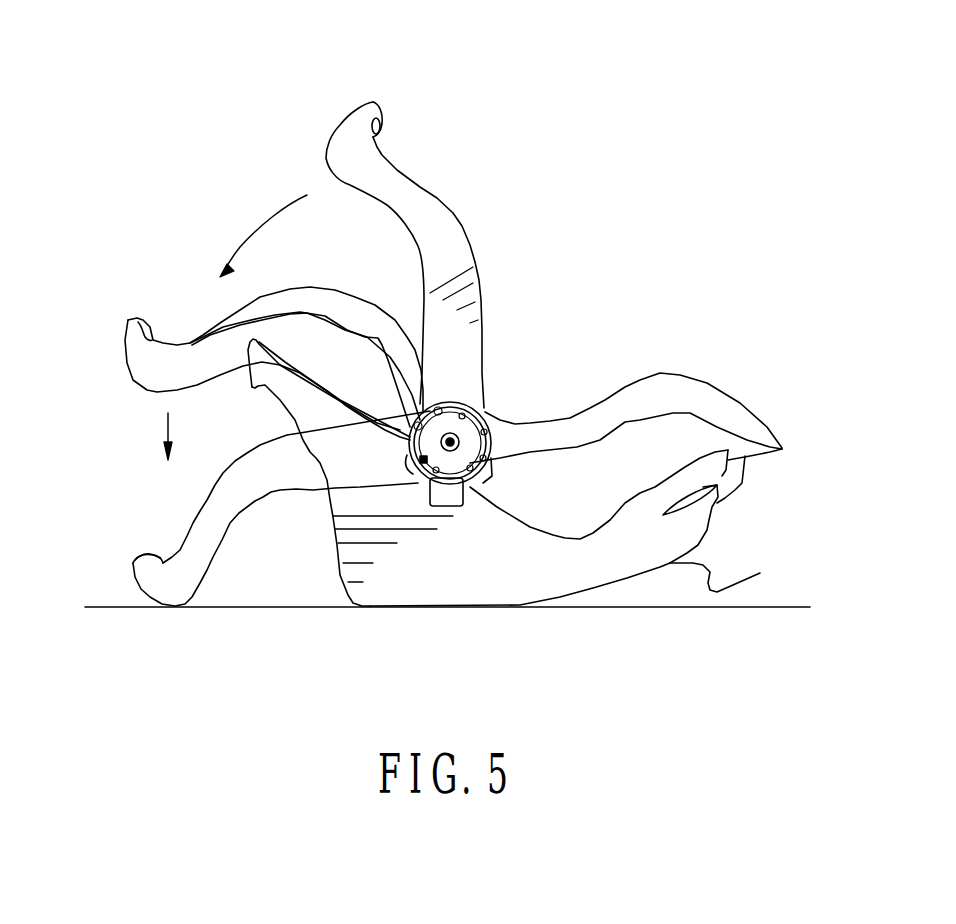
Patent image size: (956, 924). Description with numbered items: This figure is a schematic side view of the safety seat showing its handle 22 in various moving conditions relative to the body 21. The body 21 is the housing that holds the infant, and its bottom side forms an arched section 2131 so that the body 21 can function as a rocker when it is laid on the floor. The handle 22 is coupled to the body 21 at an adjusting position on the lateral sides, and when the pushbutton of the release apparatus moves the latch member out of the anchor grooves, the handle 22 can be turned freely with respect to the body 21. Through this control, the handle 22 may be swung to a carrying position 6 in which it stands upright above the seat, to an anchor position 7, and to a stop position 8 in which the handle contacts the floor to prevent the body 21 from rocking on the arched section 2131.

The carrying position 6 is at (292, 116).
The anchor position 7 is at (135, 298).
The stop position 8 is at (128, 508).
The body 21 is at (648, 383).
The handle 22 is at (438, 248).
The arched section 2131 is at (760, 573).